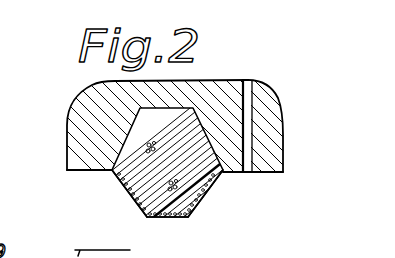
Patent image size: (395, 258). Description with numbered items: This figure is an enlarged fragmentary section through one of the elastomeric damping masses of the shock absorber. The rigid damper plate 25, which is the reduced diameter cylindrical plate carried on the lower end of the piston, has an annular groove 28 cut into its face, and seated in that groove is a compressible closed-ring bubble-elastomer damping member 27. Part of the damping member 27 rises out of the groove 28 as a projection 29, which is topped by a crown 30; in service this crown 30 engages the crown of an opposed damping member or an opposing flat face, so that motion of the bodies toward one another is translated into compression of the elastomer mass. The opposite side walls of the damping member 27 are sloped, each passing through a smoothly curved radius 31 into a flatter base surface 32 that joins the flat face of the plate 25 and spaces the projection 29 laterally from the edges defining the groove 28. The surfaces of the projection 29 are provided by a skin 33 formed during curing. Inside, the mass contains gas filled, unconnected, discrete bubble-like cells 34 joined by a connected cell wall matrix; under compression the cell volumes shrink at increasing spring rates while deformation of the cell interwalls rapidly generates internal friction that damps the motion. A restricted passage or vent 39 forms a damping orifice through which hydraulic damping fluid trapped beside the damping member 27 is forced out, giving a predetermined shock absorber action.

The cylindrical plate 25 is at (102, 101).
The damping member 27 is at (140, 137).
The annular groove 28 is at (163, 115).
The projection 29 is at (187, 190).
The crown 30 is at (165, 218).
The radius 31 is at (122, 178).
The base surface 32 is at (111, 173).
The skin 33 is at (143, 200).
The bubble-like cells 34 is at (177, 197).
The vent 39 is at (253, 103).